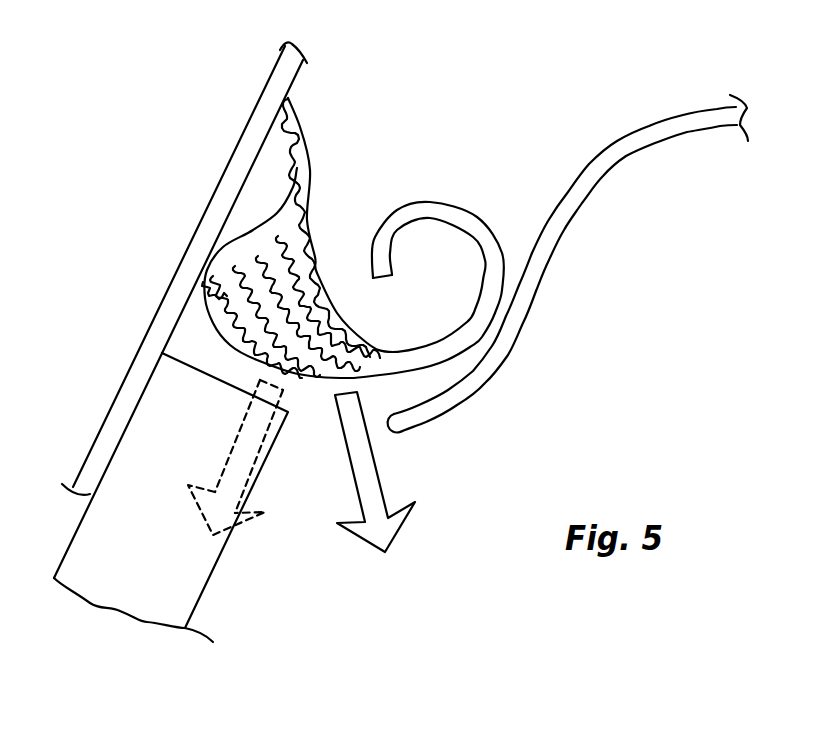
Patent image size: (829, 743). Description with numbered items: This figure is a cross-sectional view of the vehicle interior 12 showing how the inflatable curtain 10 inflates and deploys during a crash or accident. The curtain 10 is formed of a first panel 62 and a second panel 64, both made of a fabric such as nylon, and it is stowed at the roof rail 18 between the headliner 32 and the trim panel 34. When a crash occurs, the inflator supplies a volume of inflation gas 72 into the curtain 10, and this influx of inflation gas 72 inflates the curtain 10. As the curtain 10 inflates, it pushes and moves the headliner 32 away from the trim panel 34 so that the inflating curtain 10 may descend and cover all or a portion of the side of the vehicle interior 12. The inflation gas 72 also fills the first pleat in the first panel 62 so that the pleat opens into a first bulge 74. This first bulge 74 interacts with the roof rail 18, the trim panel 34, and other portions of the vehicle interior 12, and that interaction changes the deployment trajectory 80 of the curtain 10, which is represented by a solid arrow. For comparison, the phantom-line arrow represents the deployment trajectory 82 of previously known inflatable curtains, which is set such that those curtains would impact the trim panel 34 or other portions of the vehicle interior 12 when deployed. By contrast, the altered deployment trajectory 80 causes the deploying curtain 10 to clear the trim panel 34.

The inflatable curtain 10 is at (460, 208).
The vehicle interior 12 is at (505, 437).
The roof rail 18 is at (278, 92).
The headliner 32 is at (527, 302).
The trim panel 34 is at (183, 583).
The first panel 62 is at (382, 377).
The second panel 64 is at (344, 312).
The inflation gas 72 is at (283, 240).
The first bulge 74 is at (260, 260).
The deployment trajectory 80 is at (398, 522).
The deployment trajectory 82 is at (242, 453).